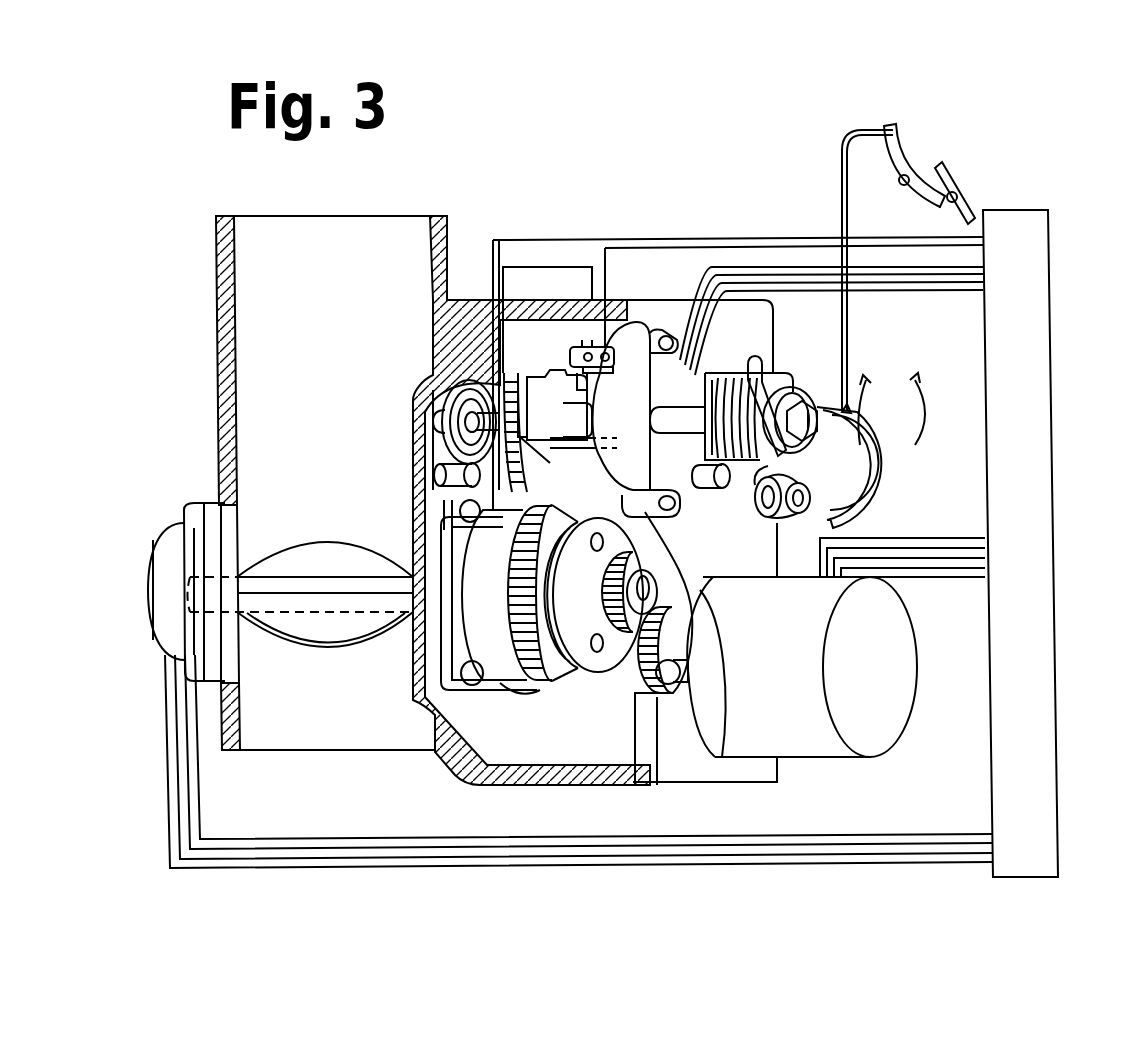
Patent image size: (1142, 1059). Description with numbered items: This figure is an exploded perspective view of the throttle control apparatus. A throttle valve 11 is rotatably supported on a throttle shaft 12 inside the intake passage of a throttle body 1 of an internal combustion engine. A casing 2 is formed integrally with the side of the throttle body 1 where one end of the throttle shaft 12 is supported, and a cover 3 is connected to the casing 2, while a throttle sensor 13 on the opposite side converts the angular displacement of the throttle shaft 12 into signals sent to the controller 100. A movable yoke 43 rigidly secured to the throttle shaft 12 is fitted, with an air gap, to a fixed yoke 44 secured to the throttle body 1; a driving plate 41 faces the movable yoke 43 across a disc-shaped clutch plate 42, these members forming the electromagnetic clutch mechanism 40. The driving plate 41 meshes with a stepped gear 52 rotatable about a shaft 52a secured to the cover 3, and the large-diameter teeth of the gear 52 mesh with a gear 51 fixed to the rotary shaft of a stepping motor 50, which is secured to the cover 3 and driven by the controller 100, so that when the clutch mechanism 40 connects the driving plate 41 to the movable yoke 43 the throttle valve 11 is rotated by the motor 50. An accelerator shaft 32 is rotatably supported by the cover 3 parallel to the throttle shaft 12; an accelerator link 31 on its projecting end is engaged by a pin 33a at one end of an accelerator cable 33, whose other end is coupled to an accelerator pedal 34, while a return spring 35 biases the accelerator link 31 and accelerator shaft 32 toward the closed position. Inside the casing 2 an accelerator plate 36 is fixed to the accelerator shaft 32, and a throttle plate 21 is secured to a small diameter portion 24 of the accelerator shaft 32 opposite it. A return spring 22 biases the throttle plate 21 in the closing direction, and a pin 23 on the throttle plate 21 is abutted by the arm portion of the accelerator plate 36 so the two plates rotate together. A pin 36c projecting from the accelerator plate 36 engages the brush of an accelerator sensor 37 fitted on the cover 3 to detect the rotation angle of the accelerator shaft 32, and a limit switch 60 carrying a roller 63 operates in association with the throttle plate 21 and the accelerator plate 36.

The throttle body 1 is at (226, 332).
The casing 2 is at (620, 305).
The cover 3 is at (677, 313).
The throttle valve 11 is at (308, 636).
The throttle shaft 12 is at (287, 583).
The throttle sensor 13 is at (160, 540).
The throttle plate 21 is at (497, 362).
The return spring 22 is at (490, 373).
The pin 23 is at (462, 525).
The small diameter portion 24 is at (440, 420).
The accelerator link 31 is at (850, 470).
The accelerator shaft 32 is at (688, 405).
The accelerator cable 33 is at (848, 212).
The pin 33a is at (805, 500).
The accelerator pedal 34 is at (897, 143).
The return spring 35 is at (775, 377).
The accelerator plate 36 is at (538, 378).
The pin 36c is at (436, 472).
The accelerator sensor 37 is at (665, 382).
The electromagnetic clutch mechanism 40 is at (505, 657).
The driving plate 41 is at (613, 660).
The clutch plate 42 is at (548, 652).
The movable yoke 43 is at (535, 690).
The fixed yoke 44 is at (440, 745).
The motor 50 is at (817, 737).
The gear 51 is at (675, 668).
The gear 52 is at (633, 660).
The shaft 52a is at (722, 720).
The limit switch 60 is at (573, 344).
The roller 63 is at (540, 375).
The controller 100 is at (1032, 827).